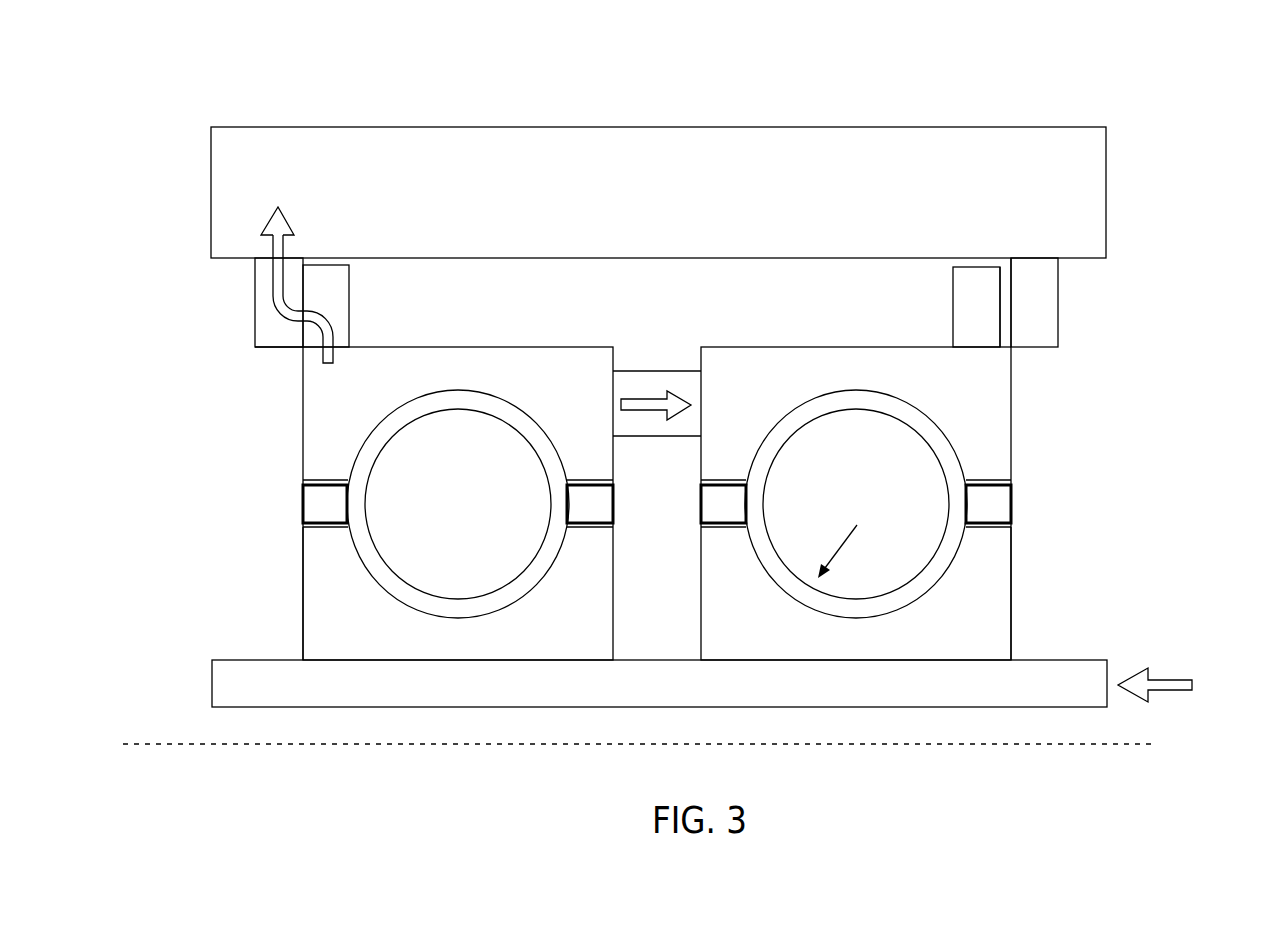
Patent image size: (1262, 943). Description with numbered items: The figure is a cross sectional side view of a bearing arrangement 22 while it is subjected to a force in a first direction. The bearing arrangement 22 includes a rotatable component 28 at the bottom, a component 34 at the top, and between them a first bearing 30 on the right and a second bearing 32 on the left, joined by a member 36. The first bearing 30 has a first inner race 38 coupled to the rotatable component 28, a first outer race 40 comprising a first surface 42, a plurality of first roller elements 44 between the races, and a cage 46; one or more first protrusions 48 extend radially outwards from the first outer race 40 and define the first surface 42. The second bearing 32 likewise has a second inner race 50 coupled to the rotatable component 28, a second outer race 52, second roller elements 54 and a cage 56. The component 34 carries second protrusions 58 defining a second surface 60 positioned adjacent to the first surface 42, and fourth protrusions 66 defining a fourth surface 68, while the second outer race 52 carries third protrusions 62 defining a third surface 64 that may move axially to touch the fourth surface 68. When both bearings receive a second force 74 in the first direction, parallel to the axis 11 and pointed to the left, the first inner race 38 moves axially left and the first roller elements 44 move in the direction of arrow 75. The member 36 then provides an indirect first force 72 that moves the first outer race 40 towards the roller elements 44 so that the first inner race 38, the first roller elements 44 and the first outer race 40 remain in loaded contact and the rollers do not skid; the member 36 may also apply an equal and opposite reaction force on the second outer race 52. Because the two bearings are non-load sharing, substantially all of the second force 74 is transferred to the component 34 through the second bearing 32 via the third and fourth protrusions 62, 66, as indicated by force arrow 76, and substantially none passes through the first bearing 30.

The axis 11 is at (340, 746).
The bearing arrangement 22 is at (1200, 150).
The rotatable component 28 is at (220, 687).
The first bearing 30 is at (1030, 500).
The second bearing 32 is at (278, 502).
The component 34 is at (708, 125).
The member 36 is at (642, 370).
The first inner race 38 is at (1003, 597).
The first outer race 40 is at (1003, 403).
The first surface 42 is at (998, 302).
The first roller elements 44 is at (872, 517).
The cage 46 is at (717, 505).
The first protrusions 48 is at (963, 298).
The second inner race 50 is at (313, 620).
The second outer race 52 is at (313, 403).
The second roller elements 54 is at (474, 517).
The cage 56 is at (603, 503).
The second protrusions 58 is at (1048, 298).
The second surface 60 is at (1013, 303).
The third protrusions 62 is at (338, 303).
The third surface 64 is at (305, 302).
The fourth protrusions 66 is at (263, 297).
The fourth surface 68 is at (295, 327).
The first force 72 is at (665, 390).
The second force 74 is at (1165, 680).
The arrow 75 is at (856, 528).
The force arrow 76 is at (277, 198).